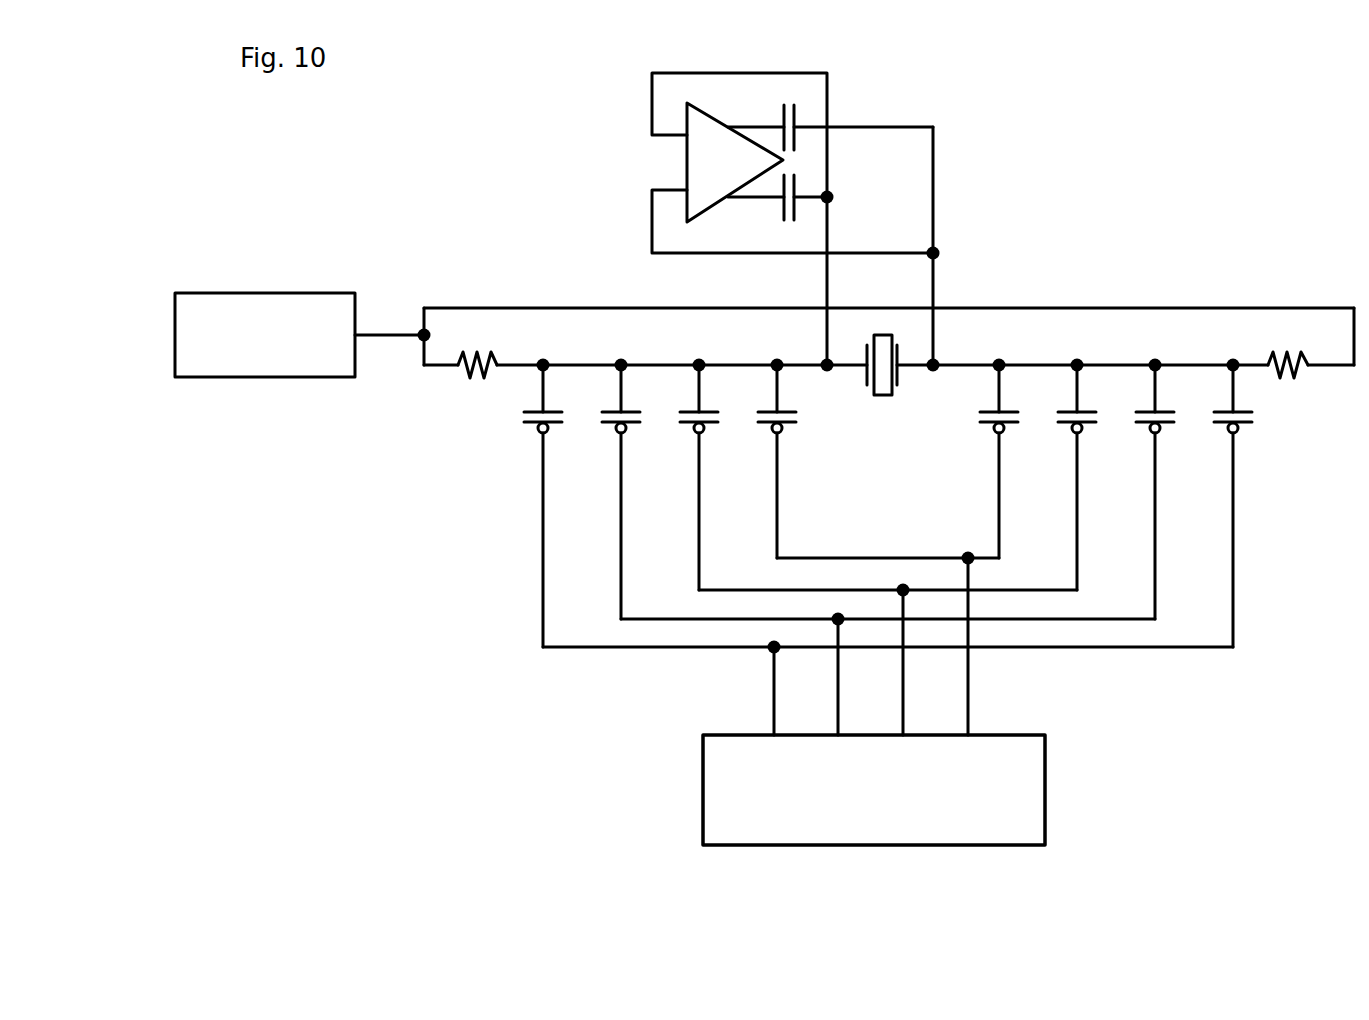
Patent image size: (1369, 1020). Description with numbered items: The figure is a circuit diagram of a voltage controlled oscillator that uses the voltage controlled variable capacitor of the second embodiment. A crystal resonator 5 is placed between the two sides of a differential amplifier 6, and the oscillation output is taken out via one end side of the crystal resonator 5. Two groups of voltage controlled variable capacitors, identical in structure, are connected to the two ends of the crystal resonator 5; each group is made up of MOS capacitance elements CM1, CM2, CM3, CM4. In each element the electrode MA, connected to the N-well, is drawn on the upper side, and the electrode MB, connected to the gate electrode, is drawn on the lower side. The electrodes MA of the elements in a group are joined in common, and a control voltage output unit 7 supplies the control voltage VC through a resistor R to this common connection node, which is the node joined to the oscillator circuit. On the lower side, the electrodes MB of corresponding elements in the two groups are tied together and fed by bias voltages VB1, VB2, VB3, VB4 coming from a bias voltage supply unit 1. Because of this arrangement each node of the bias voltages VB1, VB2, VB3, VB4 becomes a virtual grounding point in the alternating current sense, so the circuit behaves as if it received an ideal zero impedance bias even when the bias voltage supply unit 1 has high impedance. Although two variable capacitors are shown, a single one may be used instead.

The bias voltage supply unit 1 is at (1045, 790).
The crystal resonator 5 is at (880, 334).
The differential amplifier 6 is at (687, 161).
The control voltage output unit 7 is at (290, 293).
The resistor R is at (462, 372).
The control voltage VC is at (393, 325).
The electrode MA is at (535, 407).
The electrode MB is at (541, 433).
The MOS capacitance element CM1 is at (848, 506).
The MOS capacitance element CM2 is at (866, 492).
The MOS capacitance element CM3 is at (866, 477).
The MOS capacitance element CM4 is at (867, 461).
The bias voltage VB1 is at (750, 688).
The bias voltage VB2 is at (815, 674).
The bias voltage VB3 is at (880, 660).
The bias voltage VB4 is at (945, 644).